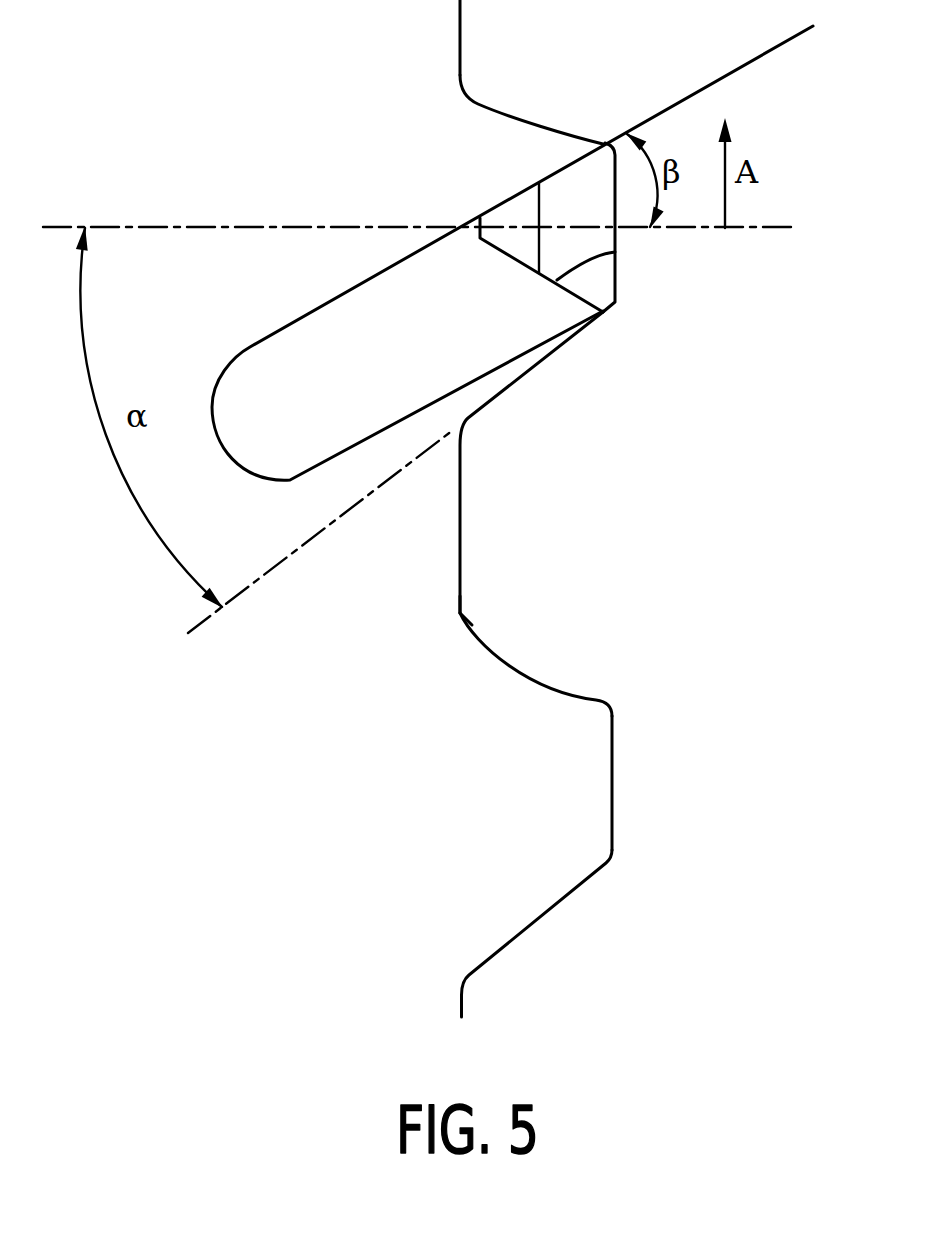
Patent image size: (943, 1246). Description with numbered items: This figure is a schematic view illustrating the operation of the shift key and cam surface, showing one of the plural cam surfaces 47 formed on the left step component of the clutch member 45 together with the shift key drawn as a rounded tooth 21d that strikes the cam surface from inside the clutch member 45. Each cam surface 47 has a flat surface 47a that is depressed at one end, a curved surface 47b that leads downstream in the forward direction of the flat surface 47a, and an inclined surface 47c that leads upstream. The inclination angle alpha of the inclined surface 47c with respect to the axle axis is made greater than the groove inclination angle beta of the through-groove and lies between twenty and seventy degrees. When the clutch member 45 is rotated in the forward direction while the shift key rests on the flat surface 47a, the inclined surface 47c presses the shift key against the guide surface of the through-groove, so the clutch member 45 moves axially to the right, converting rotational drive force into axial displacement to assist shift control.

The tooth of the saw blade 21d is at (329, 300).
The clutch member 45 is at (478, 612).
The cam surfaces 47 is at (431, 557).
The flat surface 47a is at (557, 280).
The curved surface 47b is at (497, 112).
The inclined surface 47c is at (517, 935).